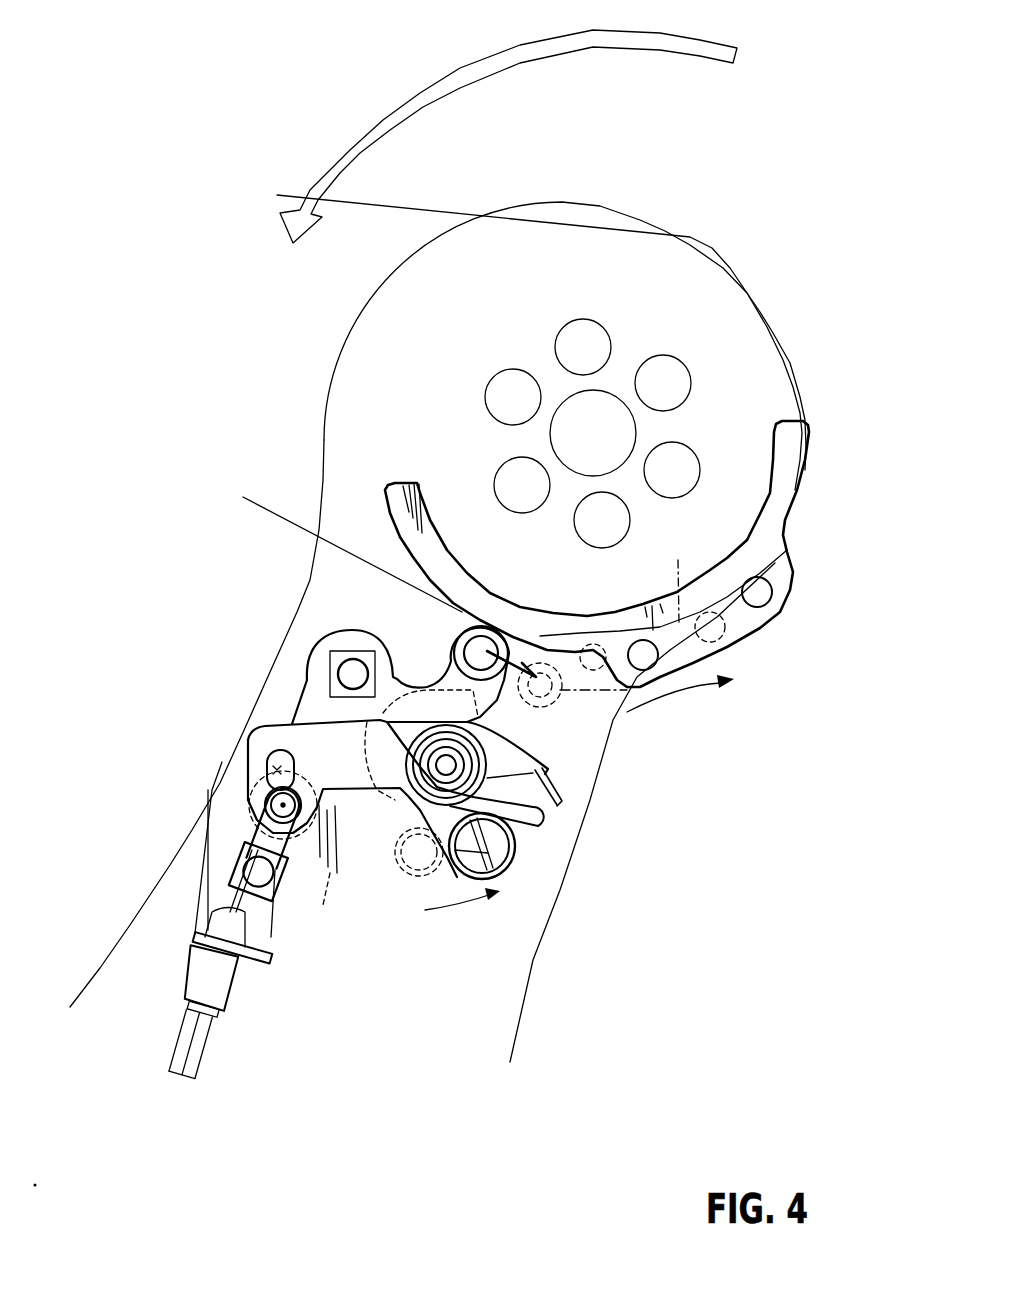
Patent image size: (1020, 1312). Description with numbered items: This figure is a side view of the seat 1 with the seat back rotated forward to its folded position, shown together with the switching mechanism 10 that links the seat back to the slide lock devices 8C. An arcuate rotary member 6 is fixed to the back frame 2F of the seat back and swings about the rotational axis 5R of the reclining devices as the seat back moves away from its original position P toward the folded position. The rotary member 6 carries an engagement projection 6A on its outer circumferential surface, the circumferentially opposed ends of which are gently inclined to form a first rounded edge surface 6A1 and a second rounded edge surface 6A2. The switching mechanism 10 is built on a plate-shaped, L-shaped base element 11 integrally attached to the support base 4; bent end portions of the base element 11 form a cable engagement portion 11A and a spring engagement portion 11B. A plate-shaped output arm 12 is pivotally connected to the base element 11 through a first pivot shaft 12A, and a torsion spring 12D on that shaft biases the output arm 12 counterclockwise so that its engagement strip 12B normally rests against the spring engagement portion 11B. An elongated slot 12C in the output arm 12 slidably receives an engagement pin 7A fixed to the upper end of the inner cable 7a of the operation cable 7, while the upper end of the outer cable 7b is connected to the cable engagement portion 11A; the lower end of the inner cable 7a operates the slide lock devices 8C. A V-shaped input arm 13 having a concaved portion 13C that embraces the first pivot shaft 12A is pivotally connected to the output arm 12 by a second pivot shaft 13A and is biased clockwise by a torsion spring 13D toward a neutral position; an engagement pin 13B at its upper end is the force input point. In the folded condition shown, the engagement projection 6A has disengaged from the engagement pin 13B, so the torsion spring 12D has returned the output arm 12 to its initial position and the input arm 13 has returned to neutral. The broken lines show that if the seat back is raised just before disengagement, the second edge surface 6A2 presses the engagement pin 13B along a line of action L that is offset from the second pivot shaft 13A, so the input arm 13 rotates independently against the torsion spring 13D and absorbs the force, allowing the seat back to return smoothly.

The brake device 1 is at (253, 280).
The back frame 2F is at (373, 245).
The original position P is at (440, 398).
The rotational axis 5R is at (593, 433).
The rotary member 6 is at (437, 558).
The engagement projection 6A is at (745, 573).
The first rounded edge surface 6A1 is at (775, 621).
The second rounded edge surface 6A2 is at (624, 648).
The support base 4 is at (605, 722).
The switching mechanism 10 is at (320, 630).
The base element 11 is at (312, 708).
The cable engagement portion 11A is at (193, 935).
The spring engagement portion 11B is at (555, 797).
The output arm 12 is at (322, 778).
The first pivot shaft 12A is at (547, 767).
The engagement strip 12B is at (543, 820).
The elongated slot 12C is at (277, 753).
The torsion spring 12D is at (427, 798).
The input arm 13 is at (455, 675).
The second pivot shaft 13A is at (438, 862).
The engagement pin 13B is at (557, 655).
The concaved portion 13C is at (477, 741).
The torsion spring 13D is at (512, 855).
The line of action L is at (323, 907).
The operation cable 7 is at (276, 971).
The engagement pin 7A is at (283, 805).
The inner cable 7a is at (240, 910).
The outer cable 7b is at (213, 985).
The slide lock devices 8C is at (157, 1070).